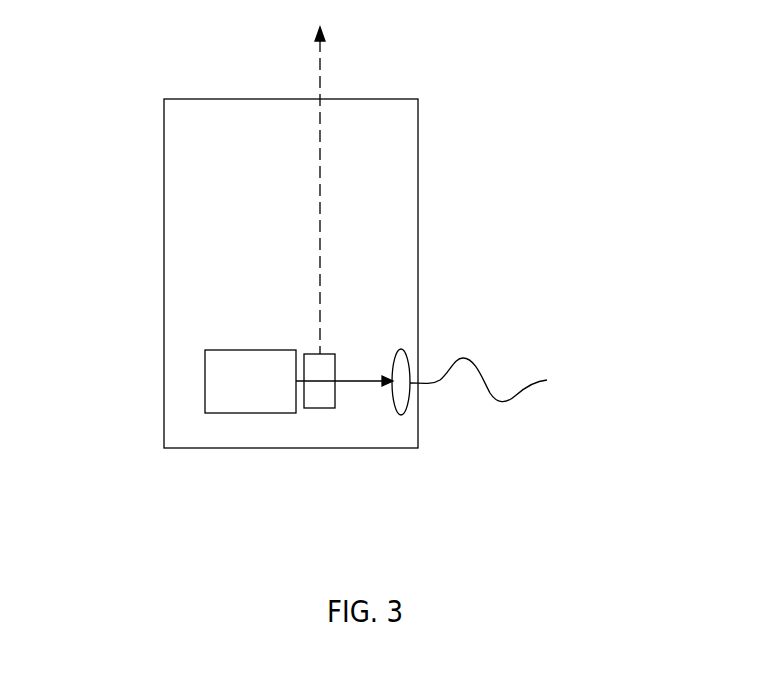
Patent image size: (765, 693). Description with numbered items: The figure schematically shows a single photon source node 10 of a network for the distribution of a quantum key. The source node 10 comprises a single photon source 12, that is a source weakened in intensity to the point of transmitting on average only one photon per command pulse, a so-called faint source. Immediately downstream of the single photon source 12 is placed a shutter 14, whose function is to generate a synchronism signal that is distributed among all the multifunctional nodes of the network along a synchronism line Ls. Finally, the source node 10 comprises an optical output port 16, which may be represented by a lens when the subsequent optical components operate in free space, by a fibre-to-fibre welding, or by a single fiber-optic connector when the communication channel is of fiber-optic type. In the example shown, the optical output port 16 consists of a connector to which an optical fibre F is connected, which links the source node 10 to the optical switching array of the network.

The source node 10 is at (426, 177).
The single photon source 12 is at (205, 385).
The shutter 14 is at (320, 408).
The optical output port 16 is at (405, 357).
The optical fibre F is at (473, 358).
The synchronism line Ls is at (335, 190).